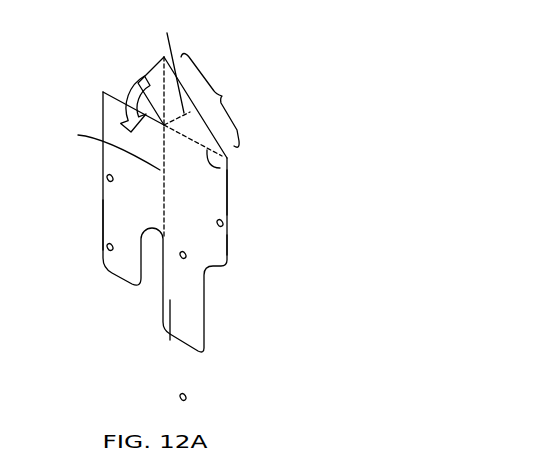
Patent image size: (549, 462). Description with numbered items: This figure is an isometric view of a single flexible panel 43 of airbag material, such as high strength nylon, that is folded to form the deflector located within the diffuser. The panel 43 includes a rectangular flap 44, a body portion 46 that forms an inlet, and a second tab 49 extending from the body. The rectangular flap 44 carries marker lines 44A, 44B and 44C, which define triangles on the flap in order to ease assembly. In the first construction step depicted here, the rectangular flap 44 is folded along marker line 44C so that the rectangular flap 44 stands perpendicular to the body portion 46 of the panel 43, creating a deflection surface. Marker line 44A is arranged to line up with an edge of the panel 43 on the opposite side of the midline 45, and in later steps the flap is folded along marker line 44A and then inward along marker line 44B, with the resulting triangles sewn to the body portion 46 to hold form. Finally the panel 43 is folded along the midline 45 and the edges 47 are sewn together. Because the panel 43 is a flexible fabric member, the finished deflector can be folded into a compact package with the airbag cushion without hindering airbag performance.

The deflector panel 43 is at (92, 75).
The rectangular flap 44 is at (206, 106).
The marker line 44A is at (157, 73).
The marker line 44B is at (167, 63).
The marker line 44C is at (220, 168).
The midline 45 is at (108, 148).
The body portion 46 is at (215, 188).
The edges 47 is at (103, 210).
The second tab 49 is at (192, 312).